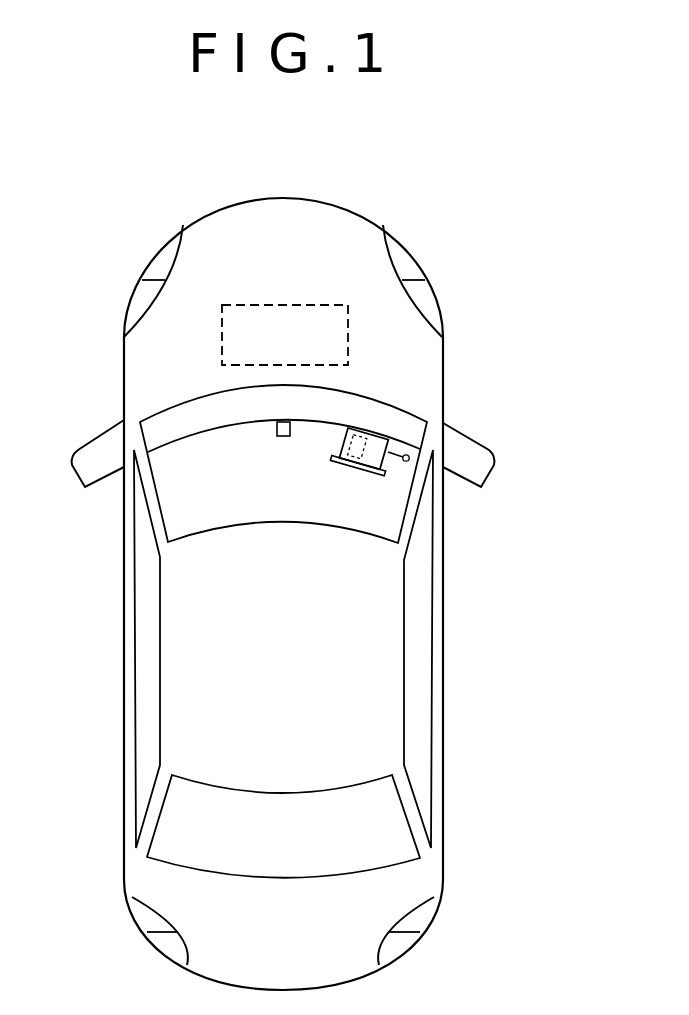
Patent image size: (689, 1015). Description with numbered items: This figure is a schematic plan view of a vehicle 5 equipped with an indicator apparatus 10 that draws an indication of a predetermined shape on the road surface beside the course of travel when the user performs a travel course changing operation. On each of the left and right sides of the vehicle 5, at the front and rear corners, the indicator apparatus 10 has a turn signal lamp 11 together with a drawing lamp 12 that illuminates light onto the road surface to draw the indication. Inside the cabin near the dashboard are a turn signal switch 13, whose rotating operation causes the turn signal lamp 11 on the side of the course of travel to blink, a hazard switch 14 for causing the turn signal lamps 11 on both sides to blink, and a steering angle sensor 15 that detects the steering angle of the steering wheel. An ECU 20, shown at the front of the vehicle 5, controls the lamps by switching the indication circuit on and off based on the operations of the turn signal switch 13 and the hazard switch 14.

The vehicle 5 is at (301, 197).
The indicator apparatus 10 is at (316, 558).
The turn signal lamp 11 is at (157, 267).
The drawing lamp 12 is at (139, 307).
The turn signal switch 13 is at (405, 463).
The hazard switch 14 is at (285, 438).
The steering angle sensor 15 is at (340, 481).
The ECU 20 is at (332, 305).